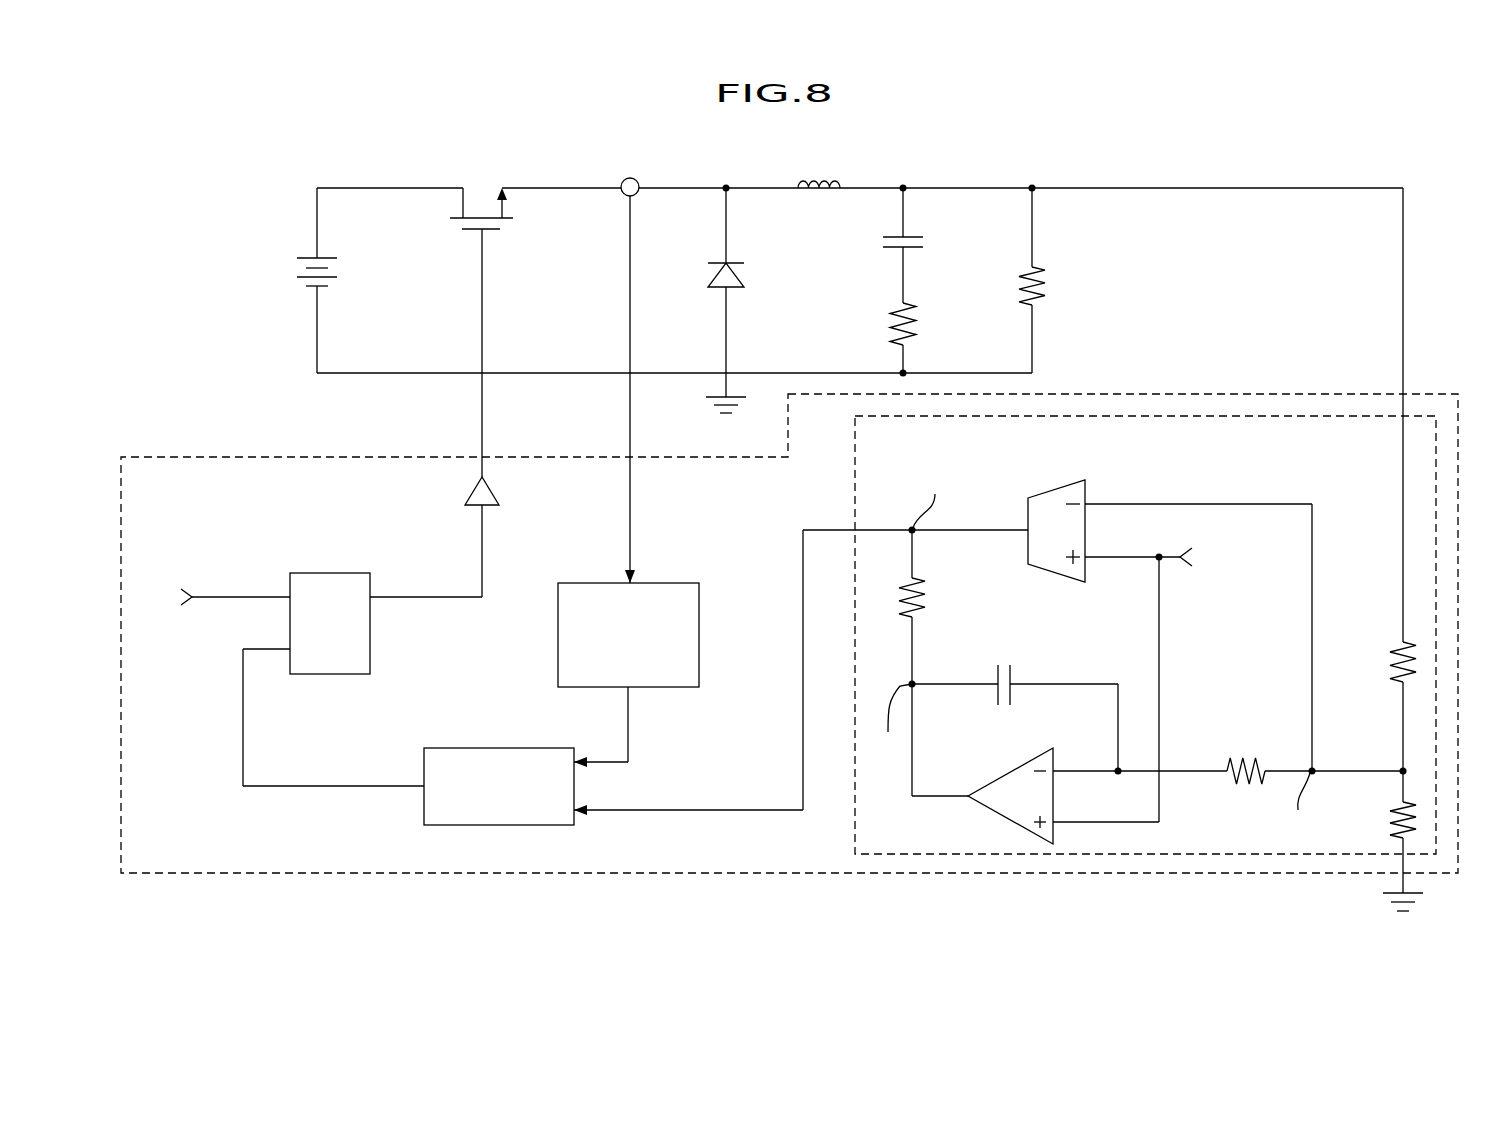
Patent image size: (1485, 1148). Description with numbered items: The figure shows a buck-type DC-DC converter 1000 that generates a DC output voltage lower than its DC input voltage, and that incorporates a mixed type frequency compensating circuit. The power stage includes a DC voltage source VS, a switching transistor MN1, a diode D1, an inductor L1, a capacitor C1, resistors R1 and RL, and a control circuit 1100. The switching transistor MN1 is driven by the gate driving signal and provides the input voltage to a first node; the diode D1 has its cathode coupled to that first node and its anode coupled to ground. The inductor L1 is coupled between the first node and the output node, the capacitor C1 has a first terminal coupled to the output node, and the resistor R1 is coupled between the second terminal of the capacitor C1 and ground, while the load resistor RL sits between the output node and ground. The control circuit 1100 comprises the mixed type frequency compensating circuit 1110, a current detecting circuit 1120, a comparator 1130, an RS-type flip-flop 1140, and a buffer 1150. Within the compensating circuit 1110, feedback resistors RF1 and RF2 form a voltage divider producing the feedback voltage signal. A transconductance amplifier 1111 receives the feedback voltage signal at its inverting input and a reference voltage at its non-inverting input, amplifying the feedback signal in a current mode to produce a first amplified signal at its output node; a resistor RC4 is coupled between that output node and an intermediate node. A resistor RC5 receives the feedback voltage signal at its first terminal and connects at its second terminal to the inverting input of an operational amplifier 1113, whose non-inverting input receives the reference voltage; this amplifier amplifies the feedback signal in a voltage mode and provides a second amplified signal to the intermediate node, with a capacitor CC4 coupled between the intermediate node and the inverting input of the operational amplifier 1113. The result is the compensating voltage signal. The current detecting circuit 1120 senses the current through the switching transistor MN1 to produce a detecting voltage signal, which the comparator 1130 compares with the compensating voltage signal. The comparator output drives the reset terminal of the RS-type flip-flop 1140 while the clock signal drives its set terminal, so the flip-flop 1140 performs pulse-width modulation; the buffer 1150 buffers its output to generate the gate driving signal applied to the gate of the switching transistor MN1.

The DC-DC converter 1000 is at (878, 146).
The control circuit 1100 is at (1152, 394).
The mixed type frequency compensating circuit 1110 is at (1272, 416).
The transconductance amplifier 1111 is at (1058, 484).
The operational amplifier 1113 is at (1010, 768).
The current detecting circuit 1120 is at (668, 583).
The comparator 1130 is at (505, 748).
The RS-type flip-flop 1140 is at (330, 573).
The buffer 1150 is at (498, 485).
The switching transistor MN1 is at (484, 317).
The DC voltage source VS is at (335, 280).
The inductor L1 is at (819, 168).
The diode D1 is at (743, 292).
The capacitor C1 is at (919, 245).
The resistor R1 is at (923, 338).
The load resistor RL is at (1050, 280).
The resistor RC4 is at (935, 607).
The capacitor CC4 is at (1015, 703).
The resistor RC5 is at (1314, 757).
The feedback resistor RF1 is at (1380, 479).
The feedback resistor RF2 is at (1379, 832).